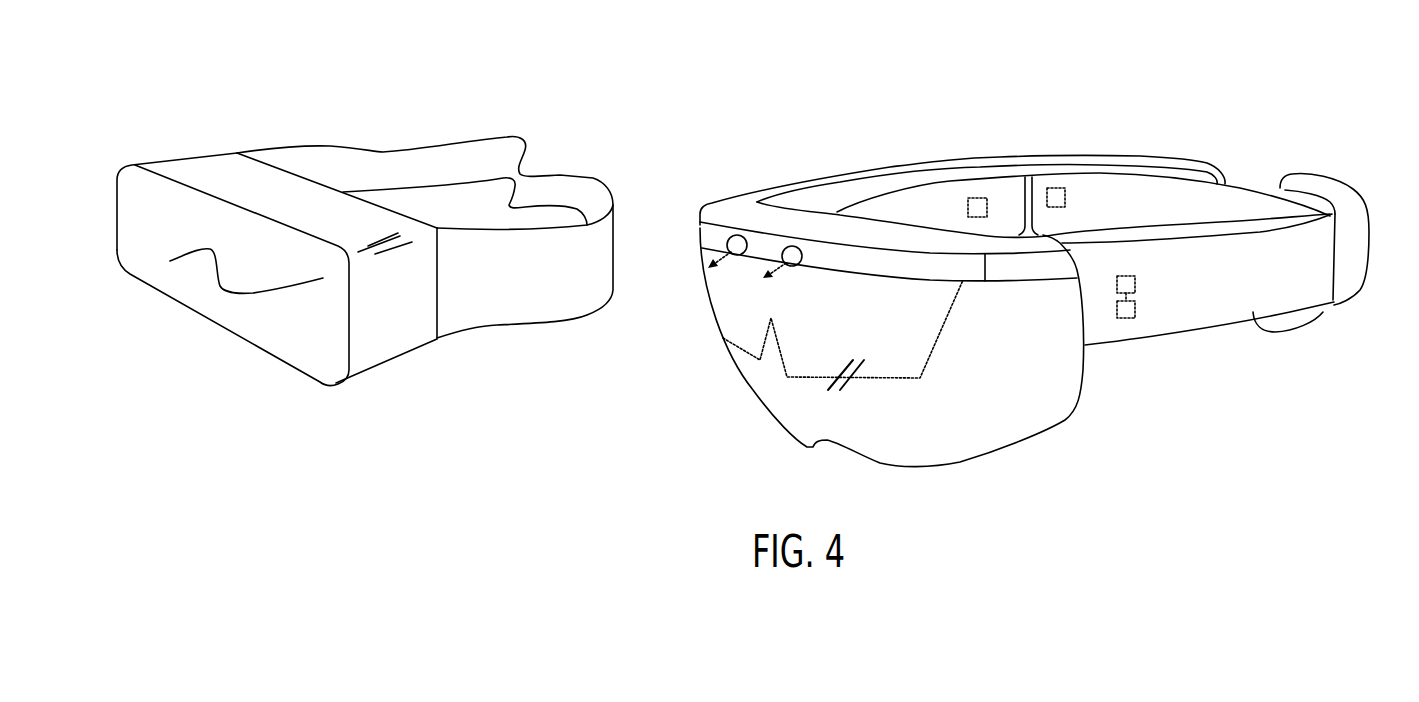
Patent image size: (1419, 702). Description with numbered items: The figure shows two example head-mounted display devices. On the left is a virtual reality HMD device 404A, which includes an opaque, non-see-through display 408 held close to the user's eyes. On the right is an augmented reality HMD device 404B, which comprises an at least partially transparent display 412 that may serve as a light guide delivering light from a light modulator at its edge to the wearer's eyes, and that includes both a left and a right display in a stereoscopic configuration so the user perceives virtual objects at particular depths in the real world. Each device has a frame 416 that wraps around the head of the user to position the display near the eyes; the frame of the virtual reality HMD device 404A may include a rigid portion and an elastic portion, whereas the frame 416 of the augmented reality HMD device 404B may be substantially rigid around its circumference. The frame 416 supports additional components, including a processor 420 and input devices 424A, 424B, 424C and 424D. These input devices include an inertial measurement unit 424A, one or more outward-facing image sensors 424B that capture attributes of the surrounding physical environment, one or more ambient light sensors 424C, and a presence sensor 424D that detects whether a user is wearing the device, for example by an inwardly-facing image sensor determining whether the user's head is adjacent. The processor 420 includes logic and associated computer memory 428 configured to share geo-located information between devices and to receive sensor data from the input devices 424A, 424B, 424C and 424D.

The virtual reality HMD device 404A is at (295, 110).
The augmented reality HMD device 404B is at (1172, 147).
The opaque, non-see-through display 408 is at (297, 358).
The frame 416 is at (463, 333).
The at least partially transparent display 412 is at (753, 347).
The inertial measurement unit 424A is at (1055, 188).
The image sensor 424B is at (733, 238).
The ambient light sensor 424C is at (789, 248).
The presence sensor 424D is at (978, 198).
The computer memory 428 is at (1127, 275).
The processor 420 is at (1136, 311).